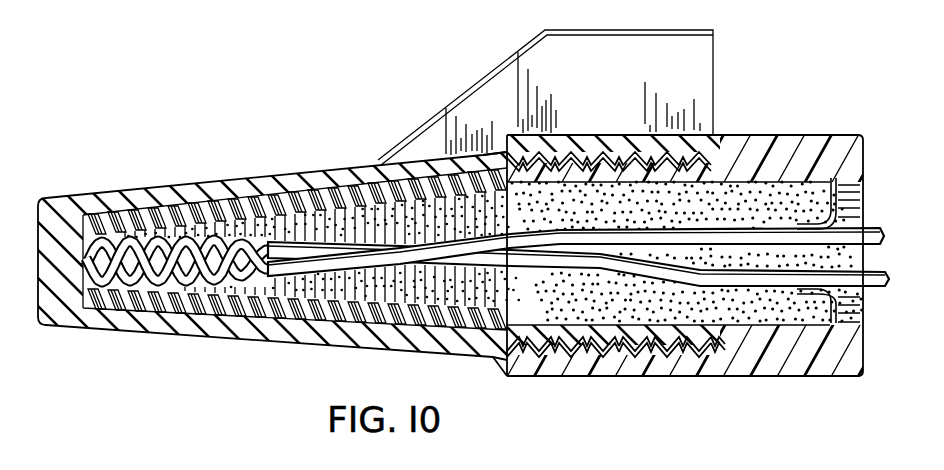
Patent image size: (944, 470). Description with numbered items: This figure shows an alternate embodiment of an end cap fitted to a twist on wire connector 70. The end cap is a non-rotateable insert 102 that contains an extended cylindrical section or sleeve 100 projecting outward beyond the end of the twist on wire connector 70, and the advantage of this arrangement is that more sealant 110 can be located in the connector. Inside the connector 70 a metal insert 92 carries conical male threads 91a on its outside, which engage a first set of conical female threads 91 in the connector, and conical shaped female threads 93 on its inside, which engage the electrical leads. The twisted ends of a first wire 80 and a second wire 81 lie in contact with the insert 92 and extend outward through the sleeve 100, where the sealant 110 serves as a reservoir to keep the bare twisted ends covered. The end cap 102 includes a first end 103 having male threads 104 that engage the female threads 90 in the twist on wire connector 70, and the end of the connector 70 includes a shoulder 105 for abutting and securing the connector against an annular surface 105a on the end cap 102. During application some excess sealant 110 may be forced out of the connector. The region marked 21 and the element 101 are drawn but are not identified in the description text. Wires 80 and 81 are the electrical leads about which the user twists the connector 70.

The twist on wire connector 70 is at (113, 161).
The conical shaped female threads 93 is at (267, 212).
The metal insert 92 is at (322, 190).
The conical male threads 91a is at (369, 187).
The first set of conical female threads 91 is at (433, 193).
The female threads 90 is at (527, 160).
The cover housing 21 is at (614, 92).
The non-rotateable insert 102 is at (733, 134).
The extended cylindrical section or sleeve 100 is at (760, 142).
The contact terminals 101 is at (823, 177).
The first wire 80 is at (873, 228).
The second wire 81 is at (870, 287).
The sealant 110 is at (579, 309).
The first end 103 is at (533, 380).
The male threads 104 is at (632, 360).
The shoulder 105 is at (722, 352).
The annular surface 105a is at (722, 352).